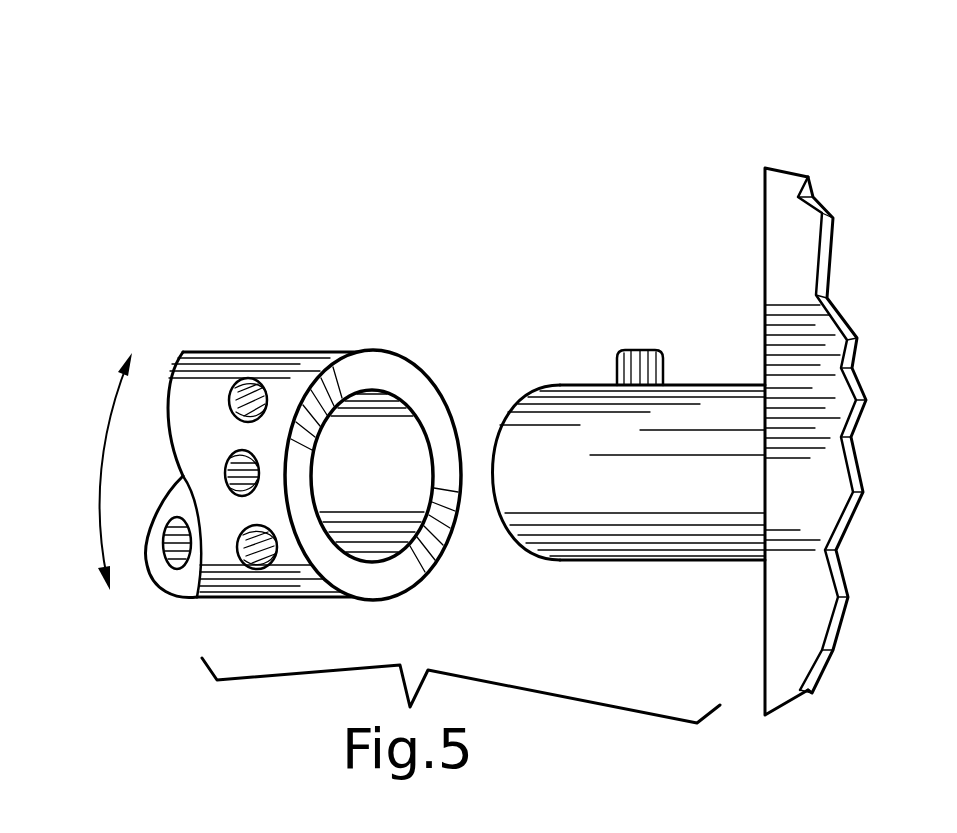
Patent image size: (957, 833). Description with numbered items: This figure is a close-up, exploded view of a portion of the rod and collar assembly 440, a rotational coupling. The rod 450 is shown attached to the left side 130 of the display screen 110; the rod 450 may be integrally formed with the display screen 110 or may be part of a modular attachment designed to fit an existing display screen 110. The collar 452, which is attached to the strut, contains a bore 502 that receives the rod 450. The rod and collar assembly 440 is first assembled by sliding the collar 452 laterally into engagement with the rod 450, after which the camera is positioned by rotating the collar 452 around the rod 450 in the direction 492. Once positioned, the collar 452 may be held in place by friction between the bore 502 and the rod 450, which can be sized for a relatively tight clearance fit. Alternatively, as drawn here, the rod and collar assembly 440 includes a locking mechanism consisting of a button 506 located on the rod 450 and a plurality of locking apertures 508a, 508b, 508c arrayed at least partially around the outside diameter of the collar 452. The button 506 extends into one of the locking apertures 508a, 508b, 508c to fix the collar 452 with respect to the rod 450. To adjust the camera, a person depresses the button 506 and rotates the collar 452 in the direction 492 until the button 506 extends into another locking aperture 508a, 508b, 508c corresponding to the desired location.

The rod and collar assembly 440 is at (679, 120).
The left side 130 is at (765, 617).
The display screen 110 is at (830, 513).
The button 506 is at (631, 350).
The rod 450 is at (590, 561).
The bore 502 is at (412, 400).
The collar 452 is at (238, 600).
The locking aperture 508a is at (228, 395).
The locking aperture 508b is at (218, 477).
The locking aperture 508c is at (237, 548).
The direction 492 is at (97, 537).